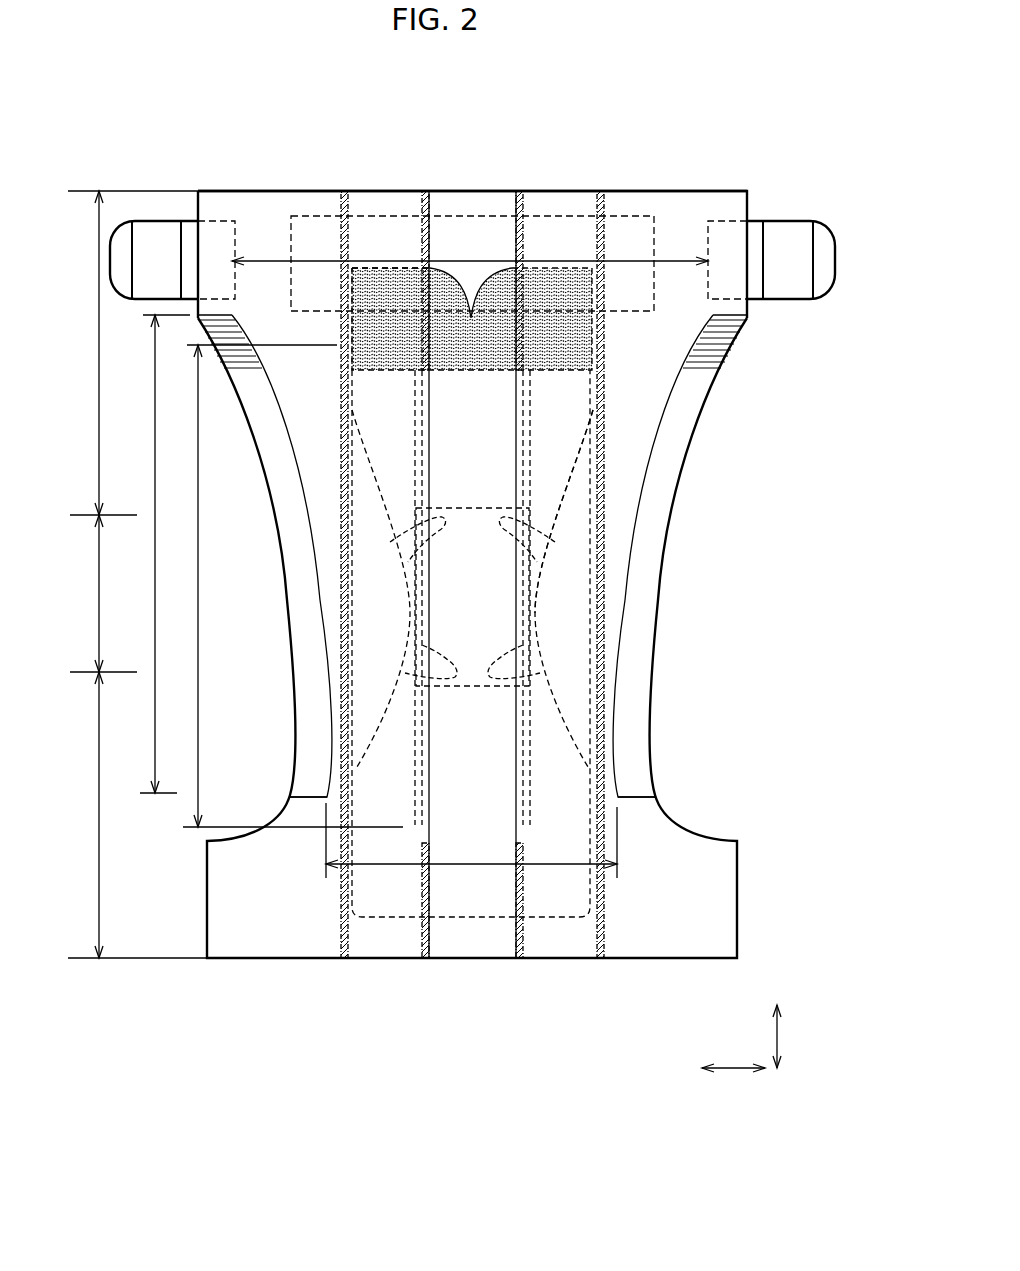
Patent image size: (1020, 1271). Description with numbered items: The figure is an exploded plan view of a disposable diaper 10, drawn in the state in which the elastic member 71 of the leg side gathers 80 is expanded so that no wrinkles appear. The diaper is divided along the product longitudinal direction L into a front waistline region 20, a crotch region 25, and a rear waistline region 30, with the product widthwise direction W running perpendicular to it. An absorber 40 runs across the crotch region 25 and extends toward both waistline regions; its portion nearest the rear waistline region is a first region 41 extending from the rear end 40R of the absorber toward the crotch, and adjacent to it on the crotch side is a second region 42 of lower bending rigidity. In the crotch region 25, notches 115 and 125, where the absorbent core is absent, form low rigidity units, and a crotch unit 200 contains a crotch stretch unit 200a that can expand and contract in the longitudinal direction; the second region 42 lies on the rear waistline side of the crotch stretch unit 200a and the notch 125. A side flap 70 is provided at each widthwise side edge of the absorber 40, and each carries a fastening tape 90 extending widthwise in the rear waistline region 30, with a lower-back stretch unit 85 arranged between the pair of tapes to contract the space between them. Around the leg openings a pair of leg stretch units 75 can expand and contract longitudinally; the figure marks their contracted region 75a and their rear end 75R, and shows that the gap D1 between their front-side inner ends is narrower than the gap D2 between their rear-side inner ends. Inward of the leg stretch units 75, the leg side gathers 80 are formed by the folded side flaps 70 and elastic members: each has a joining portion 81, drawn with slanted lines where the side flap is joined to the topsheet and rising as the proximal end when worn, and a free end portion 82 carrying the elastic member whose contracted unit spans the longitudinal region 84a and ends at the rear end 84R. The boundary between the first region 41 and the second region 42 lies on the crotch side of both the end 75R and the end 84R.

The disposable diaper 10 is at (697, 109).
The front waistline region 20 is at (99, 818).
The crotch region 25 is at (99, 596).
The rear waistline region 30 is at (99, 365).
The absorber 40 is at (532, 438).
The end of the absorber at the rear waistline region side 40R is at (478, 280).
The first region 41 is at (398, 268).
The second region 42 is at (545, 467).
The side flap 70 is at (675, 213).
The elastic member 71 is at (533, 792).
The leg stretch unit 75 is at (632, 715).
The contracted region of the leg stretch unit 75a is at (155, 482).
The end of the leg stretch unit at the rear waistline region side 75R is at (215, 313).
The leg side gather 80 is at (556, 762).
The joining portion 81 is at (426, 191).
The free end portion 82 is at (517, 488).
The region of the contracted unit 84a is at (198, 558).
The end of the contracted unit at the rear waistline region side 84R is at (348, 312).
The lower-back stretch unit 85 is at (318, 212).
The fastening tape 90 is at (786, 217).
The notch 115 is at (535, 657).
The notch 125 is at (545, 543).
The crotch unit 200 is at (540, 607).
The crotch stretch unit 200a is at (533, 613).
The gap between front waistline side ends of the leg stretch units D1 is at (350, 872).
The gap between rear waistline side ends of the leg stretch units D2 is at (460, 260).
The product longitudinal direction L is at (788, 1036).
The product widthwise direction W is at (733, 1081).